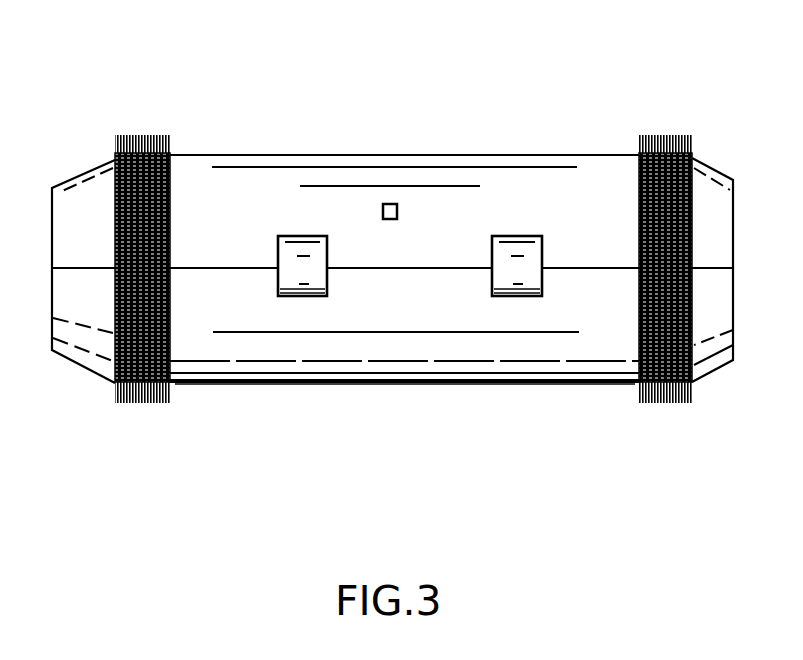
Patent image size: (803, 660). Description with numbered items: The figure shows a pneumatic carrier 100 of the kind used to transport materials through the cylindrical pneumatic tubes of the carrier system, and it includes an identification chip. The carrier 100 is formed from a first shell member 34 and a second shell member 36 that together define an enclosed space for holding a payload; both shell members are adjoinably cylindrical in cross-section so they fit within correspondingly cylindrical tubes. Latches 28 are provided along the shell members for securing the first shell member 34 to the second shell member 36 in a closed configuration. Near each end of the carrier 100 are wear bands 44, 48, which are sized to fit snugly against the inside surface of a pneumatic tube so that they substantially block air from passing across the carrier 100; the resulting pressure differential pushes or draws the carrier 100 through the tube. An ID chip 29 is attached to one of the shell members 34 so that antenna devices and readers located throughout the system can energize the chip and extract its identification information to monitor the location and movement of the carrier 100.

The carrier 100 is at (96, 163).
The first shell member 34 is at (518, 182).
The ID chip 29 is at (390, 204).
The latches 28 is at (327, 277).
The second shell member 36 is at (540, 385).
The wear band 44 is at (170, 392).
The wear band 48 is at (645, 403).